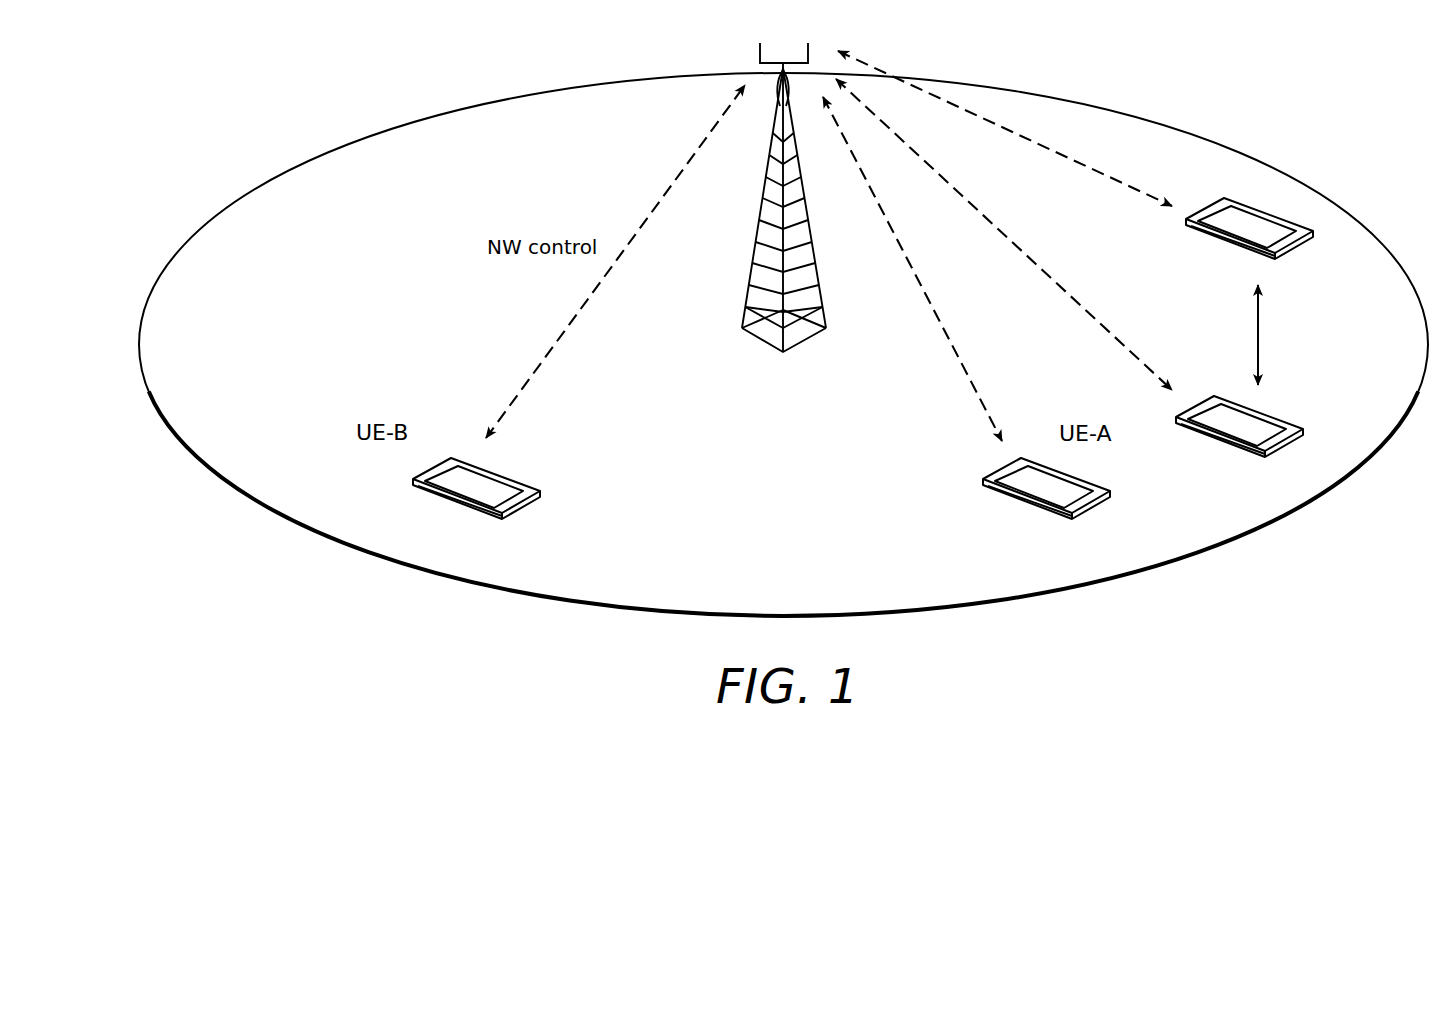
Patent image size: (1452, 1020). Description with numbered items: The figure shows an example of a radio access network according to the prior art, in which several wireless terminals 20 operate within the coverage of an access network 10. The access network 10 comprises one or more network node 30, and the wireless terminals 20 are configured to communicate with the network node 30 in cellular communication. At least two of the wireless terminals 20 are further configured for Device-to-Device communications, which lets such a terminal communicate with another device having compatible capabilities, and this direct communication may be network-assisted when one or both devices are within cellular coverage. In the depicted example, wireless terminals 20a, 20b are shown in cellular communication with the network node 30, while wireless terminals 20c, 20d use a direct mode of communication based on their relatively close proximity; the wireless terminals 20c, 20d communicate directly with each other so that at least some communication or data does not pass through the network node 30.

The access network 10 is at (370, 94).
The network node 30 is at (753, 254).
The wireless terminals 20 is at (876, 377).
The wireless terminal 20a is at (524, 509).
The wireless terminal 20b is at (1094, 509).
The wireless terminal 20c is at (1294, 420).
The wireless terminal 20d is at (1297, 249).